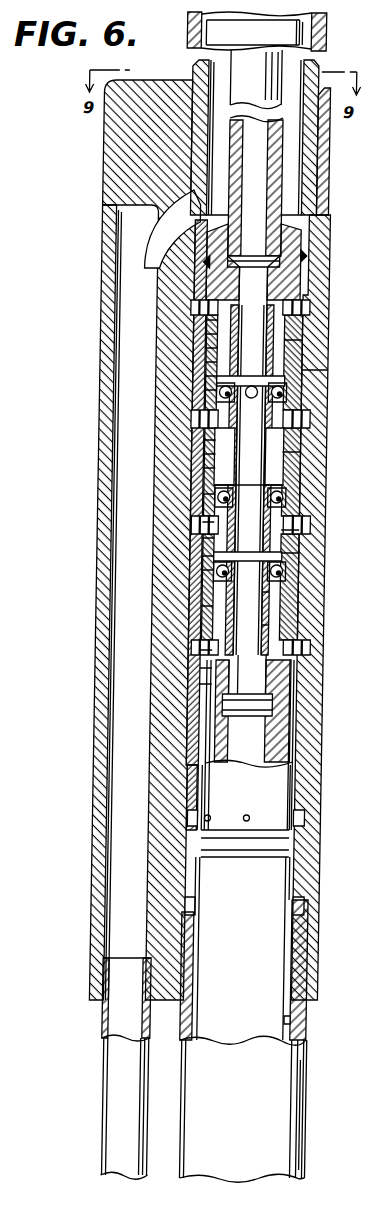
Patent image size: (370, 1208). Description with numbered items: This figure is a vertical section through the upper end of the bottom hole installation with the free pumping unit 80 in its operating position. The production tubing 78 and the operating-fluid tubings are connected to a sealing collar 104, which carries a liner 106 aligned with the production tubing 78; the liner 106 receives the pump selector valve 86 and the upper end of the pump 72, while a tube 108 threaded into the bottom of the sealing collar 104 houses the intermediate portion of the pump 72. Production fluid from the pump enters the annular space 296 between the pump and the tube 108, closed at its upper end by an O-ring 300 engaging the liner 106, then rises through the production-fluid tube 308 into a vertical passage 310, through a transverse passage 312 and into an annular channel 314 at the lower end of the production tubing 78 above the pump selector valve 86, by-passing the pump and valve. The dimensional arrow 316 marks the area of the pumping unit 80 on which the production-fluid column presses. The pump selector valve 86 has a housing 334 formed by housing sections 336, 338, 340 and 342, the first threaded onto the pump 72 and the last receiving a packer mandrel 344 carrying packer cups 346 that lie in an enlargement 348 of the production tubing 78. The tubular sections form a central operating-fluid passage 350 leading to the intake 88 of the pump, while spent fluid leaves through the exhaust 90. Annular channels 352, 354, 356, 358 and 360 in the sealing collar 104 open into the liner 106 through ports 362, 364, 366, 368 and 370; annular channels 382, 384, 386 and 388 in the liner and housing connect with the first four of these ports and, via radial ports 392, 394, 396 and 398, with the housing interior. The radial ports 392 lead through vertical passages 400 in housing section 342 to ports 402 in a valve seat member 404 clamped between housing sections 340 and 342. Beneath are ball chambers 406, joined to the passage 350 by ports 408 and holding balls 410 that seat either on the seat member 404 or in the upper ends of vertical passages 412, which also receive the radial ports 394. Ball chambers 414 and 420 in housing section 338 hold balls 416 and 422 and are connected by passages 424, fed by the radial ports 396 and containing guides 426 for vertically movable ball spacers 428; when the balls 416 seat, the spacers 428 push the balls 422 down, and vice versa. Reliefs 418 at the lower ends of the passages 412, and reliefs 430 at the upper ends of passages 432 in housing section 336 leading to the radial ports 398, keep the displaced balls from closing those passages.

The pump 72 is at (251, 1030).
The production tubing 78 is at (318, 73).
The pumping unit 80 is at (300, 698).
The pump selector valve 86 is at (298, 454).
The intake 88 is at (284, 758).
The exhaust 90 is at (308, 809).
The sealing collar 104 is at (112, 169).
The liner 106 is at (310, 256).
The tube 108 is at (316, 1124).
The annular space 296 is at (307, 1020).
The O-ring 300 is at (305, 851).
The production-fluid tube 308 is at (123, 1111).
The vertical passage 310 is at (125, 876).
The transverse passage 312 is at (170, 265).
The annular channel 314 is at (315, 189).
The dimensional arrow 316 is at (211, 279).
The housing 334 is at (309, 371).
The housing section 336 is at (183, 592).
The housing section 338 is at (226, 565).
The housing section 340 is at (214, 400).
The housing section 342 is at (206, 299).
The packer mandrel 344 is at (236, 73).
The packer cups 346 is at (211, 31).
The enlargement 348 is at (328, 27).
The central operating-fluid passage 350 is at (218, 472).
The annular channel 352 is at (211, 320).
The annular channel 354 is at (202, 417).
The annular channel 356 is at (201, 530).
The annular channel 358 is at (204, 640).
The annular channel 360 is at (204, 810).
The port 362 is at (211, 334).
The port 364 is at (211, 440).
The port 366 is at (211, 538).
The port 368 is at (211, 650).
The port 370 is at (206, 821).
The annular channel 382 is at (211, 348).
The annular channel 384 is at (211, 454).
The annular channel 386 is at (211, 556).
The annular channel 388 is at (226, 662).
The radial ports 392 is at (224, 309).
The radial ports 394 is at (211, 468).
The radial ports 396 is at (211, 570).
The radial ports 398 is at (226, 674).
The vertical passages 400 is at (211, 362).
The ports 402 is at (211, 376).
The valve seat member 404 is at (298, 341).
The ball chambers 406 is at (339, 382).
The ports 408 is at (258, 400).
The balls 410 is at (216, 389).
The vertical passages 412 is at (211, 494).
The ball chambers 414 is at (341, 480).
The balls 416 is at (211, 522).
The reliefs 418 is at (242, 470).
The ball chambers 420 is at (226, 578).
The balls 422 is at (211, 606).
The passages 424 is at (341, 527).
The guides 426 is at (342, 547).
The ball spacers 428 is at (341, 517).
The reliefs 430 is at (244, 590).
The passages 432 is at (245, 625).